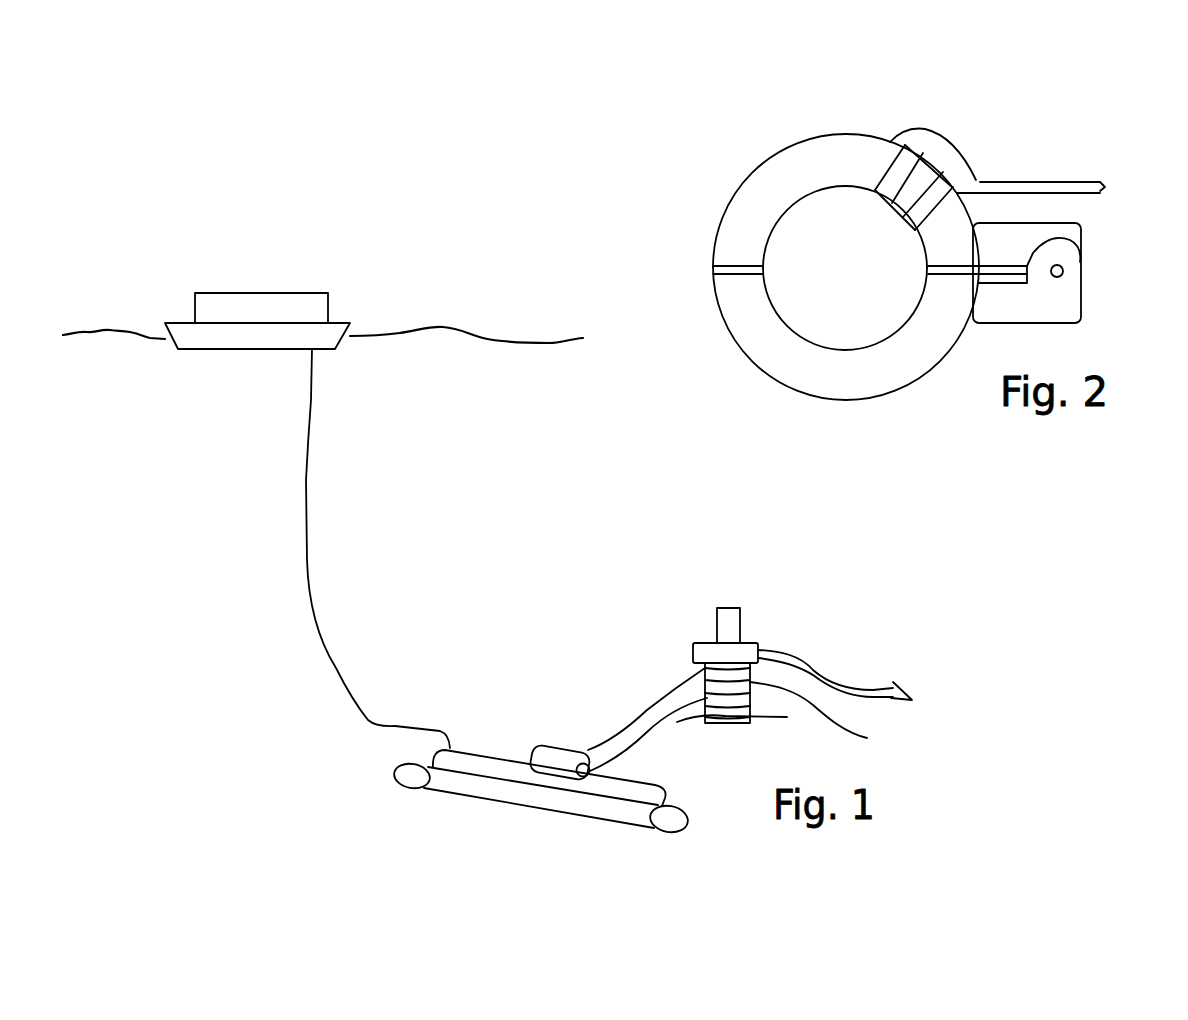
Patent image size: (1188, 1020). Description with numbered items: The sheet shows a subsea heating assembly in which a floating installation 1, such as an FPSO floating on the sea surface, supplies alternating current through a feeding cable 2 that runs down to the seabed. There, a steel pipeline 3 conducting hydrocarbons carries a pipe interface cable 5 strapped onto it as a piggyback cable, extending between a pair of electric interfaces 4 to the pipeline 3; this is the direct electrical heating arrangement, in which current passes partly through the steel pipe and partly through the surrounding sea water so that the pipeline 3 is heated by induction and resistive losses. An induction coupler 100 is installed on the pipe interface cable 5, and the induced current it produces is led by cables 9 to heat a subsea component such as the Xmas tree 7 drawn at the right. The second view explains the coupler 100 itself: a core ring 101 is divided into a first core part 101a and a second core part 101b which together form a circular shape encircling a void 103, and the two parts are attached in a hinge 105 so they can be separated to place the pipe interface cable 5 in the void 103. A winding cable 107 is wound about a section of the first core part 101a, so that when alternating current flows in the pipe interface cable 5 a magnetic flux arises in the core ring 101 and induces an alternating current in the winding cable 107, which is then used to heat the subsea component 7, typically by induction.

In FIG. 1, the floating installation 1 is at (265, 310).
In FIG. 1, the feeding cable 2 is at (306, 473).
In FIG. 1, the steel pipeline 3 is at (540, 793).
In FIG. 1, the electric interfaces 4 is at (417, 787).
In FIG. 1, the pipe interface cable 5 is at (483, 755).
In FIG. 1, the Xmas tree 7 is at (745, 650).
In FIG. 1, the cables 9 is at (750, 710).
In FIG. 1, the induction coupler 100 is at (557, 767).
In FIG. 2, the induction coupler 100 is at (874, 220).
In FIG. 2, the core ring 101 is at (817, 251).
In FIG. 2, the first core part 101a is at (733, 217).
In FIG. 2, the second core part 101b is at (733, 308).
In FIG. 2, the void 103 is at (857, 287).
In FIG. 2, the hinge 105 is at (1063, 269).
In FIG. 2, the winding cable 107 is at (970, 163).